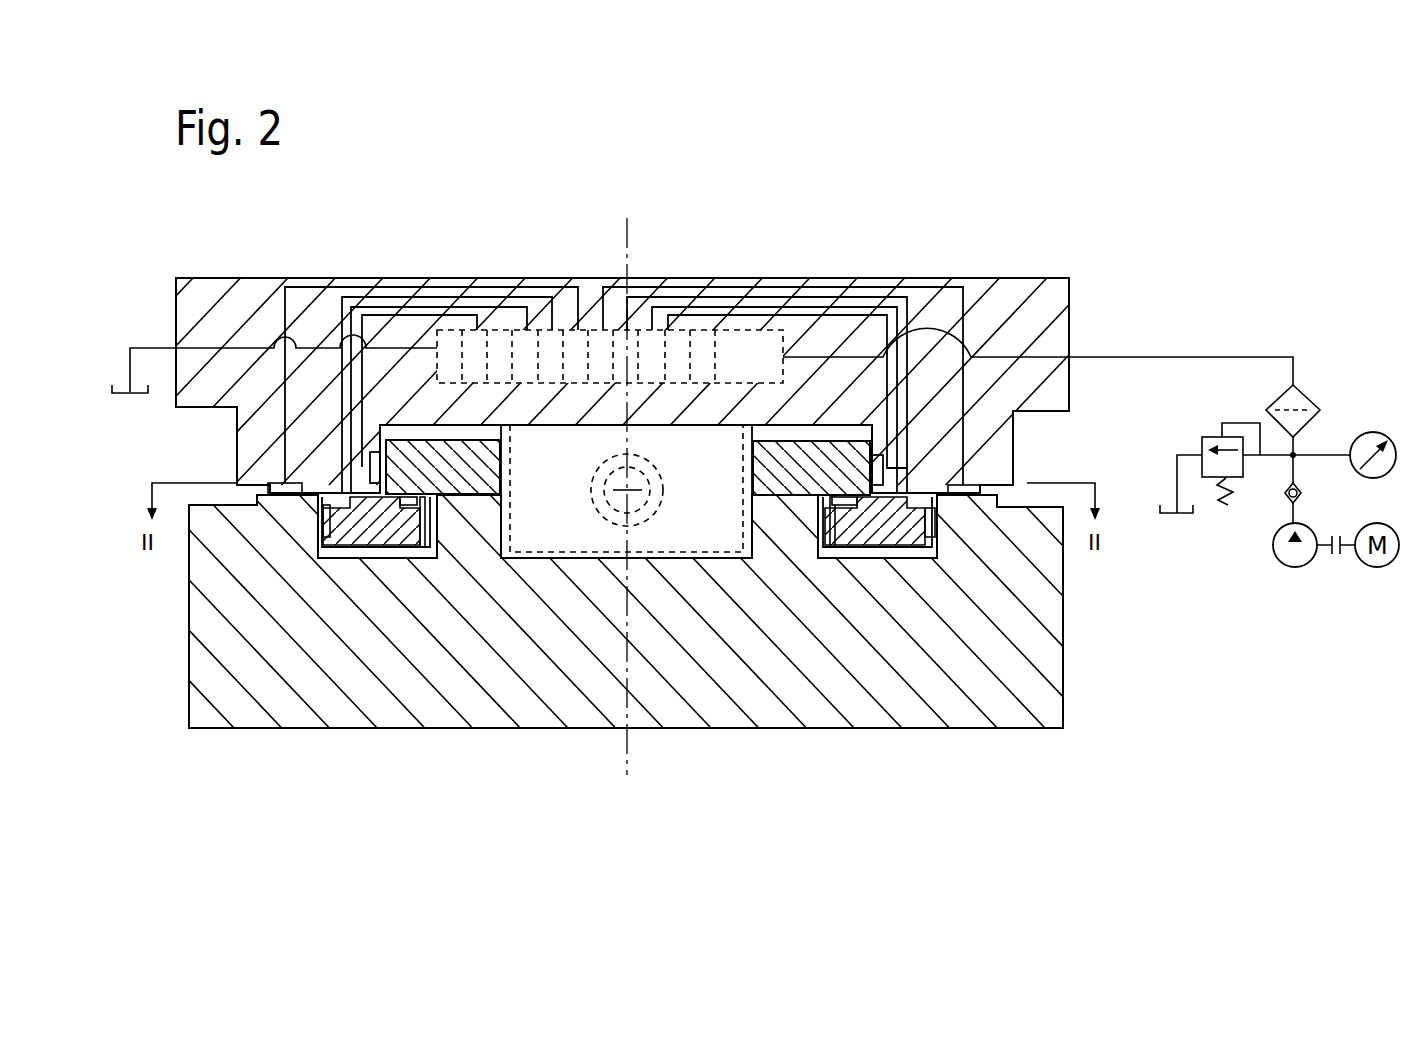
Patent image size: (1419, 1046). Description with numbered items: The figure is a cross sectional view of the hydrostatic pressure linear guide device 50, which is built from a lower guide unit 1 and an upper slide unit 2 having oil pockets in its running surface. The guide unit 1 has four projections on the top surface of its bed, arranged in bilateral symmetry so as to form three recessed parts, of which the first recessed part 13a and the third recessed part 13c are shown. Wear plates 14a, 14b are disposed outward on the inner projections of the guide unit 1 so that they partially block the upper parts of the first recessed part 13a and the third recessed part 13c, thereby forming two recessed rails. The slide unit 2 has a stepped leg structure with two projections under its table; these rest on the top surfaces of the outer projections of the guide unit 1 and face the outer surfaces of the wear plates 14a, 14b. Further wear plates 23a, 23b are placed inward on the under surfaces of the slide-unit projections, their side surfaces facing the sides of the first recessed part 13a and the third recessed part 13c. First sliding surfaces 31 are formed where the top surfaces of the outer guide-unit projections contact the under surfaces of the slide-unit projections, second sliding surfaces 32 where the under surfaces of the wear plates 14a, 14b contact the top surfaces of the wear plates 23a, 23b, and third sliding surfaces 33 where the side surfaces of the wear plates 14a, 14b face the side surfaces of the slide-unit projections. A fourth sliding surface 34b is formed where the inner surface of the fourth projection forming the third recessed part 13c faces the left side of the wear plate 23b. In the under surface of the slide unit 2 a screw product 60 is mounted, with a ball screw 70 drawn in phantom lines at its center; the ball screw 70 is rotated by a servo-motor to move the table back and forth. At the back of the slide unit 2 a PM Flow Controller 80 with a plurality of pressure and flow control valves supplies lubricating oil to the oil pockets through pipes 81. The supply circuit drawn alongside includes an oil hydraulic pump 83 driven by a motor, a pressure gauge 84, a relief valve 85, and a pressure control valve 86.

The guide unit 1 is at (178, 698).
The slide unit 2 is at (162, 302).
The first recessed part 13a is at (877, 553).
The third recessed part 13c is at (363, 556).
The wear plate 14a is at (785, 478).
The wear plate 14b is at (447, 497).
The wear plate 23a is at (906, 550).
The wear plate 23b is at (330, 537).
The first sliding surface 31 is at (285, 482).
The second sliding surface 32 is at (829, 495).
The third sliding surface 33 is at (376, 440).
The fourth sliding surface 34b is at (318, 530).
The hydrostatic pressure linear guide device 50 is at (802, 139).
The screw product 60 is at (568, 528).
The ball screw 70 is at (633, 500).
The PM Flow Controller 80 is at (746, 338).
The pipes 81 is at (287, 311).
The oil hydraulic pump 83 is at (1314, 528).
The pressure gauge 84 is at (1371, 432).
The relief valve 85 is at (1237, 480).
The pressure control valve 86 is at (1314, 398).